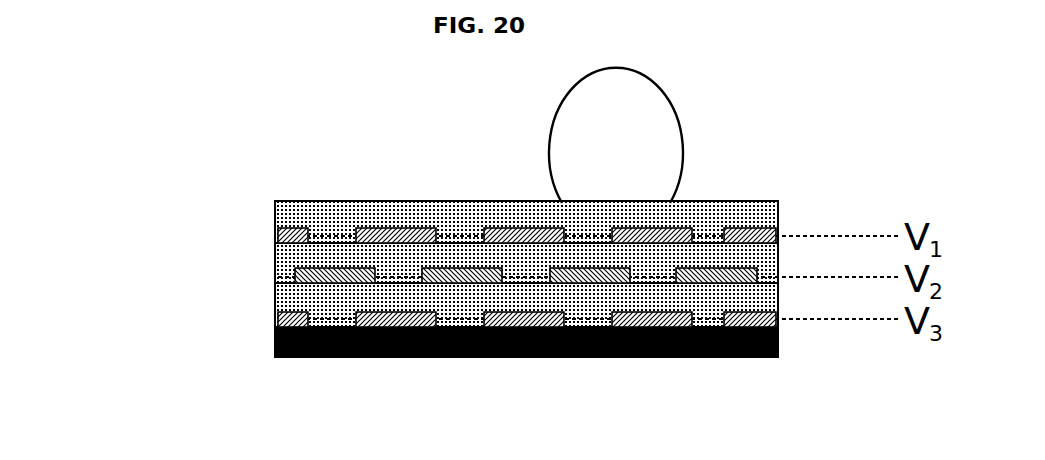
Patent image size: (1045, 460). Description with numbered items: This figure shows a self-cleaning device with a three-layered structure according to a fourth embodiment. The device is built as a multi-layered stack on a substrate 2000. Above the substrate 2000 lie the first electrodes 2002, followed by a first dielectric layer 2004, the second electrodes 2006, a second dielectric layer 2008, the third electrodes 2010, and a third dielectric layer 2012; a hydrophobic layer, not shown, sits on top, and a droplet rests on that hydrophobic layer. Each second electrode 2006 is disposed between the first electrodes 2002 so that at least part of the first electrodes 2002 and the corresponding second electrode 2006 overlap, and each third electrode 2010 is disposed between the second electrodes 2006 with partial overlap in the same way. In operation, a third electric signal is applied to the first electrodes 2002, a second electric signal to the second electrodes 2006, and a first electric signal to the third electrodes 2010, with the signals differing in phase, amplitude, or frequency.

The substrate 2000 is at (276, 341).
The first electrode 2002 is at (276, 318).
The first dielectric layer 2004 is at (276, 298).
The second electrode 2006 is at (295, 277).
The second dielectric layer 2008 is at (276, 265).
The third electrode 2010 is at (276, 233).
The third dielectric layer 2012 is at (276, 214).